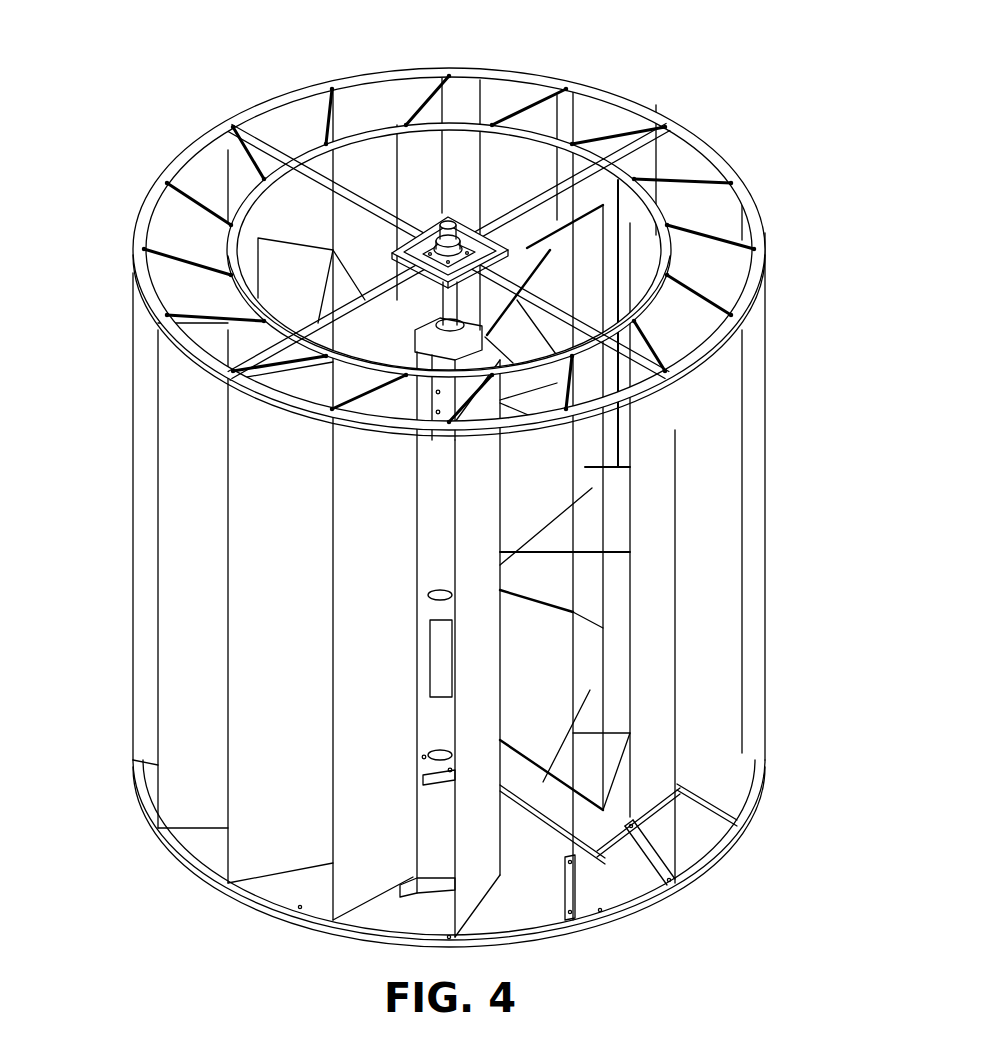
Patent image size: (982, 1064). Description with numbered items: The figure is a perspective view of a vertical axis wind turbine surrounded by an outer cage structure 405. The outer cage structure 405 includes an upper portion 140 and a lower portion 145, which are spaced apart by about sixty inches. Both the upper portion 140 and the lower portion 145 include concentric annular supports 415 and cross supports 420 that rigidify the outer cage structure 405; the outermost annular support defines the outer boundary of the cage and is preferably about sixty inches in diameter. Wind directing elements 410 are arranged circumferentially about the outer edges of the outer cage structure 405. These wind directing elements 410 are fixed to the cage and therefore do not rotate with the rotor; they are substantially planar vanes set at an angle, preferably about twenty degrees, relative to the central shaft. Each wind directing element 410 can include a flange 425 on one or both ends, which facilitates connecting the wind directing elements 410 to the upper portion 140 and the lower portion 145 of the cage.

The outer cage structure 405 is at (184, 102).
The wind directing elements 410 is at (560, 116).
The concentric annular supports 415 is at (470, 122).
The cross supports 420 is at (265, 128).
The flange 425 is at (742, 284).
The upper portion 140 is at (762, 218).
The lower portion 145 is at (722, 862).